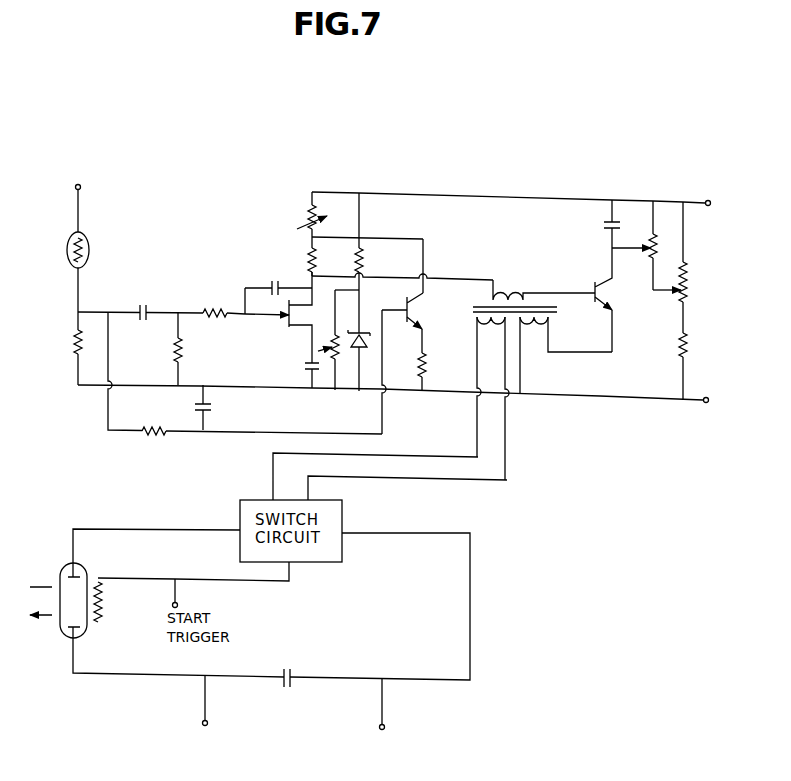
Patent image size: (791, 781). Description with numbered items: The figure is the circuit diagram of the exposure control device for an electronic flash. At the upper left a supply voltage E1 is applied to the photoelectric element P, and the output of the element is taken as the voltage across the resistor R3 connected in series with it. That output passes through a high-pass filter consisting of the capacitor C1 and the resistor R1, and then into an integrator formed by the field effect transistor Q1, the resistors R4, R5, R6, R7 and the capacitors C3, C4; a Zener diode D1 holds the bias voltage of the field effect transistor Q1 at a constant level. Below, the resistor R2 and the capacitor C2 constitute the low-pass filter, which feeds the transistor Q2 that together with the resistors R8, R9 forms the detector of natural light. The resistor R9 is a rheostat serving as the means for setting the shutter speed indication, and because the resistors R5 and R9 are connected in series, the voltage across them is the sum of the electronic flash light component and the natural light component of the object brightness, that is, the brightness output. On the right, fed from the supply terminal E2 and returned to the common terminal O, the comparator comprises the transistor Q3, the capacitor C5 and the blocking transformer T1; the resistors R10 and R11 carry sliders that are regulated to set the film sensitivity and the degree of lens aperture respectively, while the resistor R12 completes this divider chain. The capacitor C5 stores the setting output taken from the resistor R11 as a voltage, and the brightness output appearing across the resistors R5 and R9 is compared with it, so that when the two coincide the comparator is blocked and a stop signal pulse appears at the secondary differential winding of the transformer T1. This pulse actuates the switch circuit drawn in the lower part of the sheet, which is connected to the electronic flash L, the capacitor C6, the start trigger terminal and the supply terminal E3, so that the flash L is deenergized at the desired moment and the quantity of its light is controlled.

The voltage applied to the photoelectric element E1 is at (80, 200).
The photoelectric element P is at (84, 281).
The resistor R3 is at (88, 357).
The capacitor C1 is at (146, 303).
The resistor R1 is at (189, 349).
The resistor R4 is at (216, 324).
The capacitor C2 is at (212, 407).
The resistor R2 is at (154, 442).
The capacitor C3 is at (278, 281).
The field effect transistor Q1 is at (278, 317).
The capacitor C4 is at (303, 372).
The resistor R7 is at (328, 340).
The Zener diode D1 is at (363, 331).
The resistor R9 is at (321, 220).
The resistor R5 is at (321, 262).
The resistor R6 is at (369, 234).
The transistor Q2 is at (425, 313).
The resistor R8 is at (432, 360).
The blocking transformer T1 is at (532, 380).
The transistor Q3 is at (615, 300).
The capacitor C5 is at (602, 224).
The resistor R11 is at (648, 245).
The resistor R10 is at (684, 267).
The resistor R12 is at (697, 366).
The supply voltage terminal E2 is at (713, 192).
The common terminal O is at (546, 576).
The electronic flash L is at (66, 607).
The flash capacitor C6 is at (291, 688).
The supply voltage terminal E3 is at (208, 714).